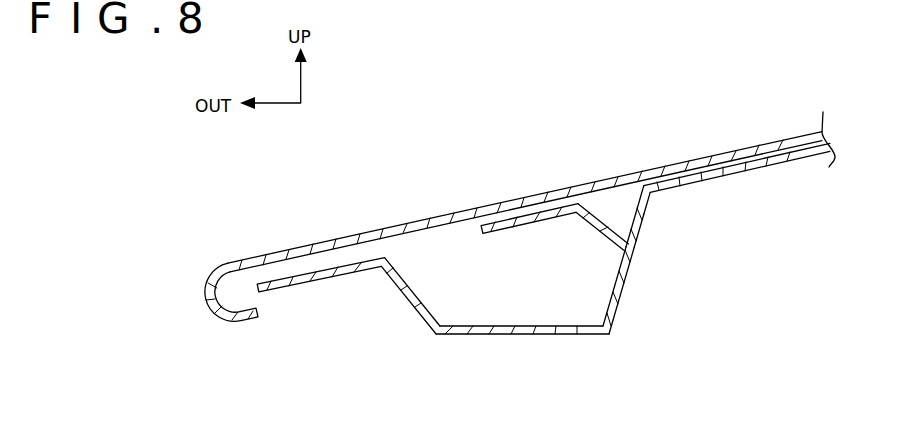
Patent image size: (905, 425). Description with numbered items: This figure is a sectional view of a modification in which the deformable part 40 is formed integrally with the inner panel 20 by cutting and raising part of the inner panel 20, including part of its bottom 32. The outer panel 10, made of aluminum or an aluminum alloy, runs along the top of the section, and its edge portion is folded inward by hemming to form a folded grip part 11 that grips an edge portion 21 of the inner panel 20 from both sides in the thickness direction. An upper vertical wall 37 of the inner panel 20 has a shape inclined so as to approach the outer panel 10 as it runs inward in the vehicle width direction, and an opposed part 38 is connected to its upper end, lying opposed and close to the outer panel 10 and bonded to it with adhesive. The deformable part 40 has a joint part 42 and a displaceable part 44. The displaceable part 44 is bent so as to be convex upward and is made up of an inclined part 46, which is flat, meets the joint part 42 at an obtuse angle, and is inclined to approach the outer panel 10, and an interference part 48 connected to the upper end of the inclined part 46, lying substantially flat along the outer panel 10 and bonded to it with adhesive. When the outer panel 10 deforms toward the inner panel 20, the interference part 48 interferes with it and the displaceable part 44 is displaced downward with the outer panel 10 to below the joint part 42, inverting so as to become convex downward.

The outer panel 10 is at (360, 227).
The folded grip part 11 is at (212, 306).
The inner panel 20 is at (445, 325).
The edge portion 21 is at (297, 289).
The bottom 32 is at (475, 334).
The upper vertical wall 37 is at (646, 214).
The opposed part 38 is at (758, 167).
The deformable part 40 is at (655, 158).
The joint part 42 is at (620, 240).
The displaceable part 44 is at (554, 174).
The inclined part 46 is at (596, 192).
The interference part 48 is at (509, 225).